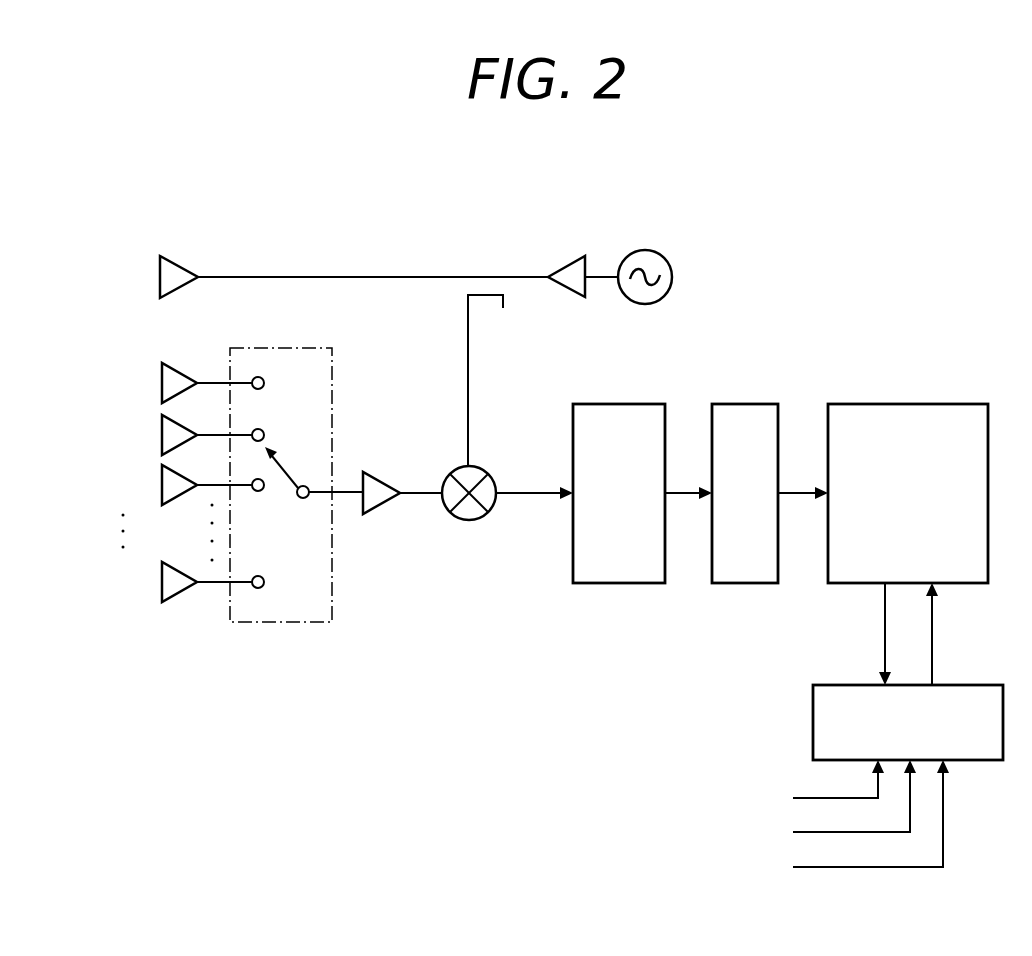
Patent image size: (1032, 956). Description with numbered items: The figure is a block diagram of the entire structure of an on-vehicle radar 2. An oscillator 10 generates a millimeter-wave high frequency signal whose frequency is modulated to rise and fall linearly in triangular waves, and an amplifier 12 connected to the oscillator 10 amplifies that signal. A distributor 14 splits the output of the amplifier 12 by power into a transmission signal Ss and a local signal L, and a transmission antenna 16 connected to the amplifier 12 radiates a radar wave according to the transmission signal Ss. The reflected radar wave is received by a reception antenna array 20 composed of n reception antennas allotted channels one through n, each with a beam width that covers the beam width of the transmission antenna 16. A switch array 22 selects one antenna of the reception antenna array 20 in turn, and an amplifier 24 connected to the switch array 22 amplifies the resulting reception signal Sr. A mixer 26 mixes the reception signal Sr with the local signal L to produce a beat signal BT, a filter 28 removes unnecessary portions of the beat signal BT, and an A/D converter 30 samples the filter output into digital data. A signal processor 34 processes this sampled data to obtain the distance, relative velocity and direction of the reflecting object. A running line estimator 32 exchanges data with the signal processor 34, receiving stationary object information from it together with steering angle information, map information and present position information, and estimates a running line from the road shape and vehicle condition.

The on-vehicle radar 2 is at (302, 175).
The oscillator 10 is at (640, 250).
The amplifier 12 is at (566, 256).
The distributor 14 is at (462, 285).
The transmission antenna 16 is at (181, 256).
The reception antenna array 20 is at (98, 358).
The switch array 22 is at (260, 346).
The amplifier 24 is at (377, 516).
The mixer 26 is at (472, 521).
The filter 28 is at (613, 404).
The A/D converter 30 is at (741, 404).
The running line estimator 32 is at (980, 685).
The signal processor 34 is at (906, 404).